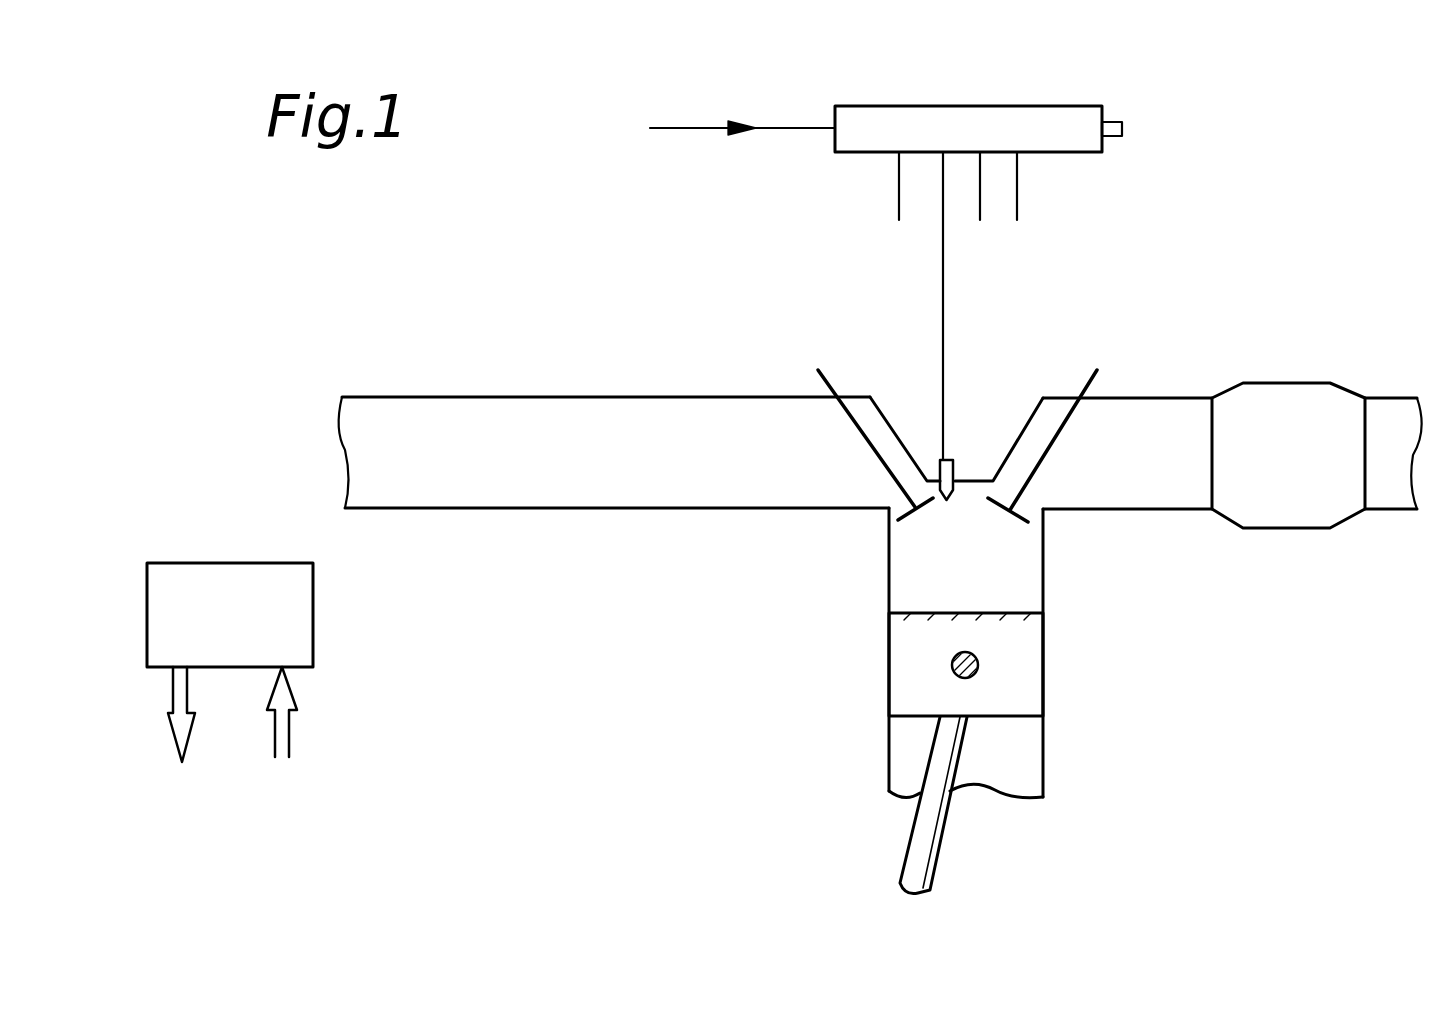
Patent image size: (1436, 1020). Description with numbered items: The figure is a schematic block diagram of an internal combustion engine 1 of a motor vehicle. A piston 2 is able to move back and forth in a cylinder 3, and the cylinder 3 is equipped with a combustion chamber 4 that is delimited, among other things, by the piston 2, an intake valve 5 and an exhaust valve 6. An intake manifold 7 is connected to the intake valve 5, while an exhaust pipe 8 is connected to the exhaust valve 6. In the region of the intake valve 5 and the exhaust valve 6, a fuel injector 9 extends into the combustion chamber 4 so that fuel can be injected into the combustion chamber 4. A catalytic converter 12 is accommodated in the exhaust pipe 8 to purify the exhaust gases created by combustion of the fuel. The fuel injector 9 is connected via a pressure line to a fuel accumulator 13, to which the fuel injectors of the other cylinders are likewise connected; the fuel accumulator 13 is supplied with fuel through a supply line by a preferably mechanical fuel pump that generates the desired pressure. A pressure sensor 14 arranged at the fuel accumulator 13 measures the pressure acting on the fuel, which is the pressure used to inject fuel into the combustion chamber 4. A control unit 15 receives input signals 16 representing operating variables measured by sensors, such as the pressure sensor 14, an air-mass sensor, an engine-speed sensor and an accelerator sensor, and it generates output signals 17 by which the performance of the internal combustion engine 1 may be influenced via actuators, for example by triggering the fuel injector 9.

The internal combustion engine 1 is at (697, 680).
The piston 2 is at (1020, 658).
The cylinder 3 is at (1045, 558).
The combustion chamber 4 is at (905, 570).
The intake valve 5 is at (860, 404).
The exhaust valve 6 is at (1053, 423).
The intake manifold 7 is at (688, 493).
The exhaust pipe 8 is at (1147, 492).
The fuel injector 9 is at (940, 470).
The catalytic converter 12 is at (1270, 474).
The fuel accumulator 13 is at (876, 120).
The pressure sensor 14 is at (1122, 128).
The control unit 15 is at (232, 575).
The input signals 16 is at (282, 737).
The output signals 17 is at (185, 683).